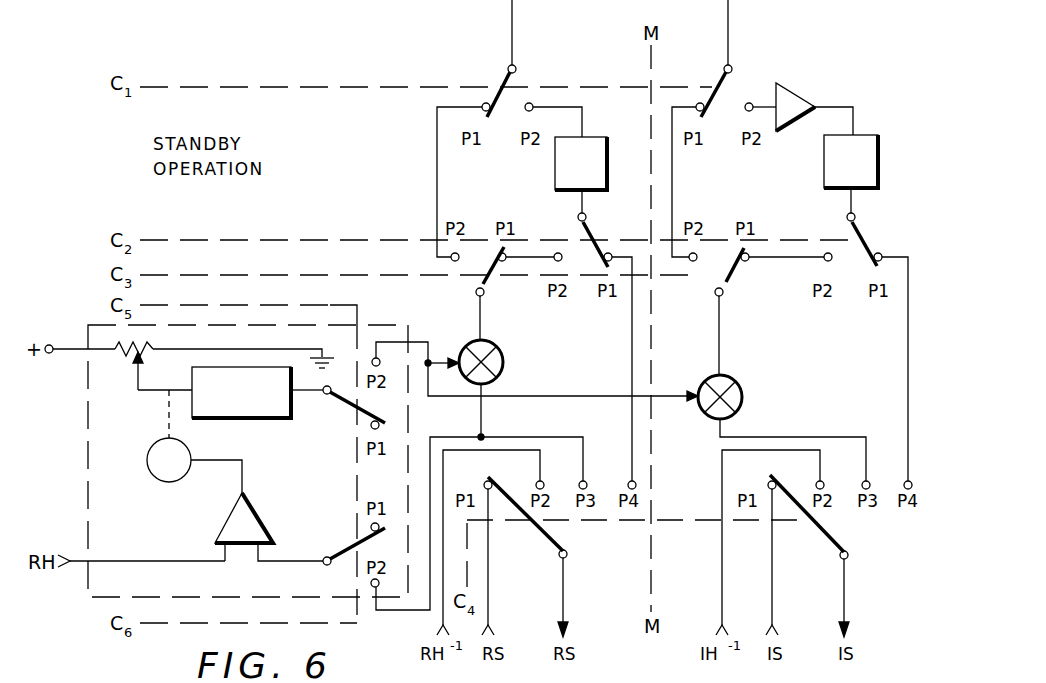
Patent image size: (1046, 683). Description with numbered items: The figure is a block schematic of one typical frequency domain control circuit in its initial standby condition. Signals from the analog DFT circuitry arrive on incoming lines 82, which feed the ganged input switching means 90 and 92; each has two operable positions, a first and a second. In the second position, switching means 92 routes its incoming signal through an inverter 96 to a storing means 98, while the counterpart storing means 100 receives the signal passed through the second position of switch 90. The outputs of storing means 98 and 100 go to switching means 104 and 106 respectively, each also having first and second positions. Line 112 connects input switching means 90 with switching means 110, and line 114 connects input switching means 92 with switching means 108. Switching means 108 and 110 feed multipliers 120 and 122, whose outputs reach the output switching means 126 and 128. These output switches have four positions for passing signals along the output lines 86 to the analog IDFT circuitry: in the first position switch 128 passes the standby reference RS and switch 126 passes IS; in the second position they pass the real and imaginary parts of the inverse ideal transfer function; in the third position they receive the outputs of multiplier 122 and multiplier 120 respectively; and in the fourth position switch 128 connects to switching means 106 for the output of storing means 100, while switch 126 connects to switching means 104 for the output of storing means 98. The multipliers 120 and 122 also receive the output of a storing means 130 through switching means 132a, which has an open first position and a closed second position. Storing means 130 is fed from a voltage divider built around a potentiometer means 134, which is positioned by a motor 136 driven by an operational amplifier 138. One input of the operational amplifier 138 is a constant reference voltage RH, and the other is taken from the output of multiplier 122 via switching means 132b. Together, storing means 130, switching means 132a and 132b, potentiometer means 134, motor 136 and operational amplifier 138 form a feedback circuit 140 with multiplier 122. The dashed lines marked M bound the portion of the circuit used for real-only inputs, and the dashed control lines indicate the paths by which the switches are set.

The incoming lines 82 is at (512, 43).
The output line 86 is at (565, 591).
The input switching means 90 is at (505, 82).
The input switching means 92 is at (722, 82).
The inverter 96 is at (792, 100).
The storing means 98 is at (872, 170).
The storing means 100 is at (555, 168).
The switching means 104 is at (870, 228).
The switching means 106 is at (600, 227).
The switching means 108 is at (728, 280).
The switching means 110 is at (490, 280).
The line 112 is at (437, 172).
The line 114 is at (674, 172).
The multiplier 120 is at (742, 385).
The multiplier 122 is at (498, 356).
The output switching means 126 is at (828, 538).
The output switching means 128 is at (547, 533).
The storing means 130 is at (265, 413).
The switching means 132a is at (348, 407).
The switching means 132b is at (352, 532).
The potentiometer means 134 is at (125, 352).
The motor 136 is at (152, 452).
The operational amplifier 138 is at (233, 513).
The feedback circuit 140 is at (88, 497).